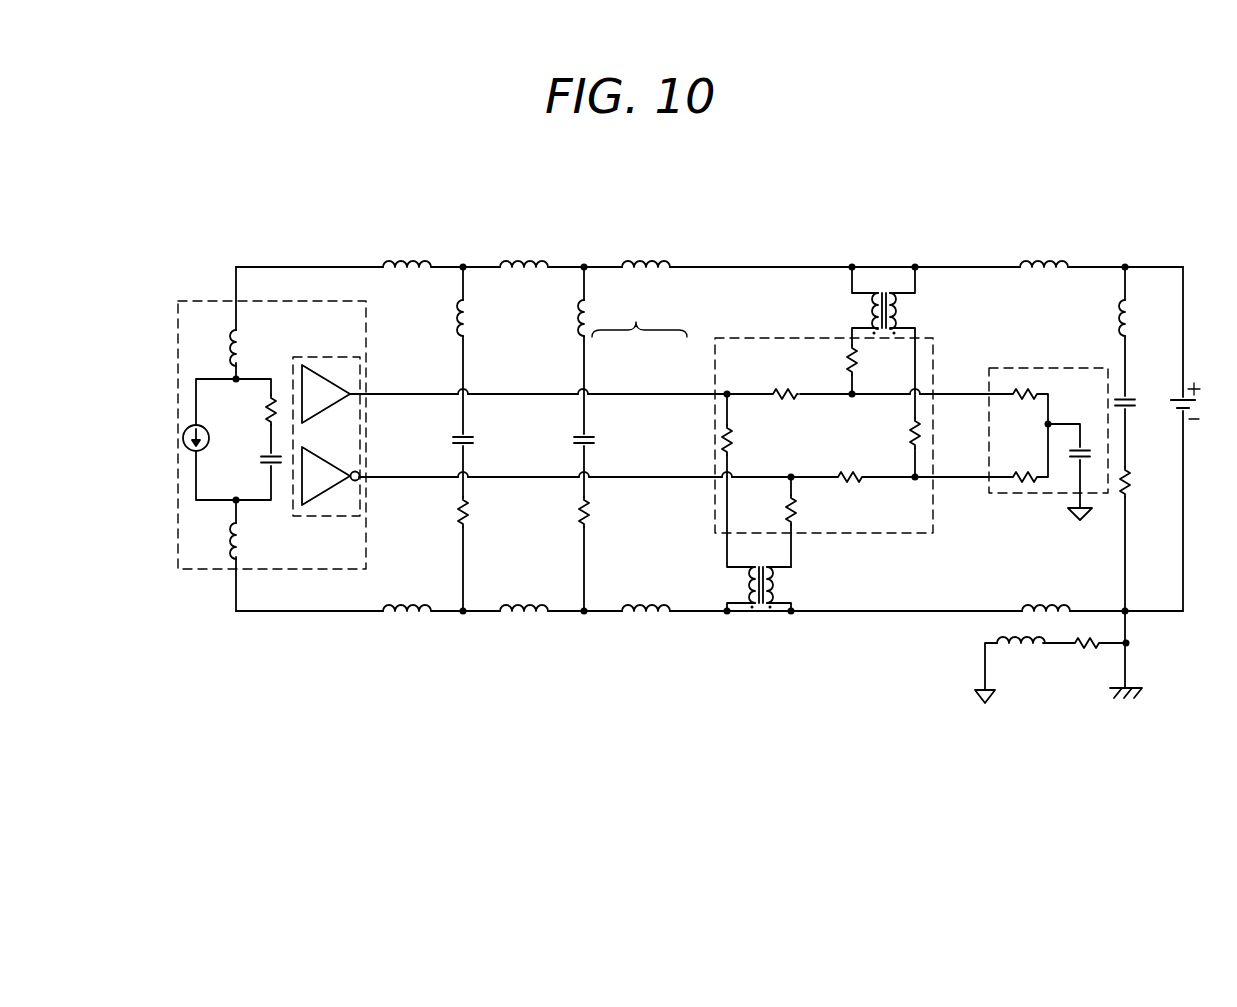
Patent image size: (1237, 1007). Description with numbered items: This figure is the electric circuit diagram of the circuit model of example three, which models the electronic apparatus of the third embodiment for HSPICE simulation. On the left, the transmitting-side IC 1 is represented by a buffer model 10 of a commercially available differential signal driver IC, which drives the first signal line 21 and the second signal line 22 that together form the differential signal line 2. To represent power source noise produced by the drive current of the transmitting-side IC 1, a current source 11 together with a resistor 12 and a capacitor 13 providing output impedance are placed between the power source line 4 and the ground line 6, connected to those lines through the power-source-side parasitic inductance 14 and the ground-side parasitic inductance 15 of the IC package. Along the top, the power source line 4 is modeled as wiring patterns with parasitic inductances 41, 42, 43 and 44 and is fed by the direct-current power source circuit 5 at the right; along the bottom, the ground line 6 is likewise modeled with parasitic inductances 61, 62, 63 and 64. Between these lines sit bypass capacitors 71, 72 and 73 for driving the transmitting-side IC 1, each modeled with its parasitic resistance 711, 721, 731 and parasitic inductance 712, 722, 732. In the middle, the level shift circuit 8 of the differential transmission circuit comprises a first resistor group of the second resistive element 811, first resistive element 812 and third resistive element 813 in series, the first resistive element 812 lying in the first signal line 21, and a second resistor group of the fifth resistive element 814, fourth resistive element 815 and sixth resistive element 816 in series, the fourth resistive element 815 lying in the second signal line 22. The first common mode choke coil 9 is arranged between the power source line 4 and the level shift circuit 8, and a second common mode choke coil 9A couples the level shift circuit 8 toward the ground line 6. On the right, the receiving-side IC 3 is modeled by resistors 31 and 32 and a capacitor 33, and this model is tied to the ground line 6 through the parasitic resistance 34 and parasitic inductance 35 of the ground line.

The transmitting-side IC 1 is at (199, 300).
The buffer model 10 is at (320, 357).
The current source 11 is at (183, 438).
The resistor 12 is at (267, 408).
The capacitor 13 is at (266, 463).
The power-source-side parasitic inductance 14 is at (231, 344).
The ground-side parasitic inductance 15 is at (231, 546).
The differential signal line 2 is at (639, 314).
The first signal line 21 is at (681, 388).
The second signal line 22 is at (631, 471).
The receiving-side IC 3 is at (1038, 368).
The resistor 31 is at (1020, 390).
The resistor 32 is at (1015, 474).
The capacitor 33 is at (1086, 448).
The parasitic resistance 34 is at (1086, 648).
The parasitic inductance 35 is at (1018, 646).
The power source line 4 is at (765, 265).
The parasitic inductance 41 is at (399, 262).
The parasitic inductance 42 is at (517, 262).
The parasitic inductance 43 is at (640, 262).
The parasitic inductance 44 is at (1036, 262).
The direct-current power source circuit 5 is at (1198, 402).
The ground line 6 is at (884, 613).
The parasitic inductance 61 is at (400, 626).
The parasitic inductance 62 is at (518, 626).
The parasitic inductance 63 is at (645, 626).
The parasitic inductance 64 is at (1040, 604).
The bypass capacitor 71 is at (452, 440).
The bypass capacitor 72 is at (573, 440).
The bypass capacitor 73 is at (1138, 400).
The parasitic resistance 711 is at (457, 512).
The parasitic inductance 712 is at (457, 318).
The parasitic resistance 721 is at (578, 512).
The parasitic inductance 722 is at (578, 318).
The parasitic resistance 731 is at (1134, 480).
The parasitic inductance 732 is at (1119, 316).
The level shift circuit 8 is at (766, 338).
The second resistive element 811 is at (846, 360).
The first resistive element 812 is at (785, 390).
The third resistive element 813 is at (722, 440).
The fifth resistive element 814 is at (912, 434).
The fourth resistive element 815 is at (845, 474).
The sixth resistive element 816 is at (796, 513).
The common mode choke coil 9 is at (870, 312).
The common mode choke coil 9A is at (750, 586).